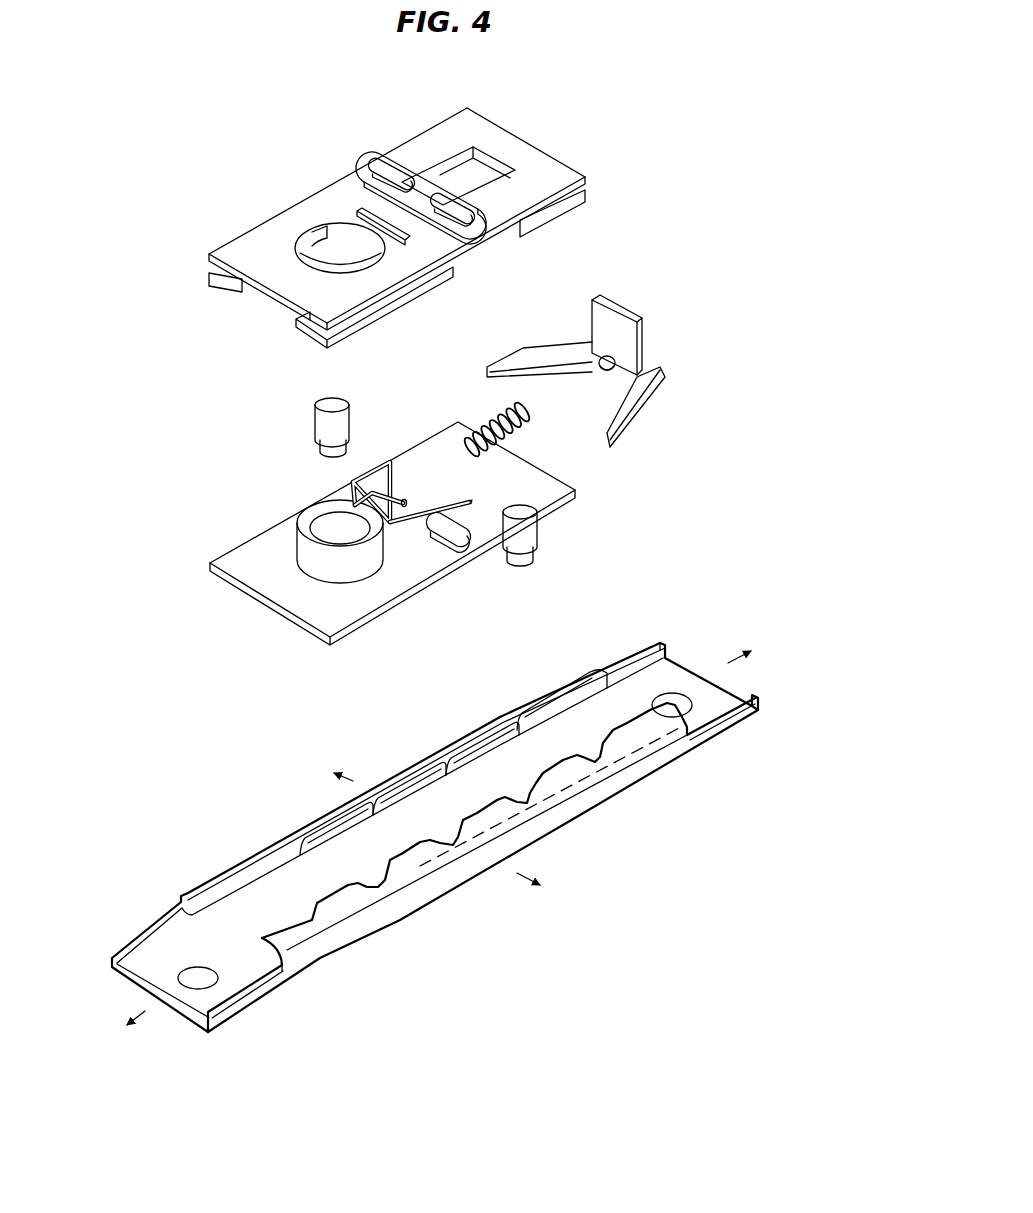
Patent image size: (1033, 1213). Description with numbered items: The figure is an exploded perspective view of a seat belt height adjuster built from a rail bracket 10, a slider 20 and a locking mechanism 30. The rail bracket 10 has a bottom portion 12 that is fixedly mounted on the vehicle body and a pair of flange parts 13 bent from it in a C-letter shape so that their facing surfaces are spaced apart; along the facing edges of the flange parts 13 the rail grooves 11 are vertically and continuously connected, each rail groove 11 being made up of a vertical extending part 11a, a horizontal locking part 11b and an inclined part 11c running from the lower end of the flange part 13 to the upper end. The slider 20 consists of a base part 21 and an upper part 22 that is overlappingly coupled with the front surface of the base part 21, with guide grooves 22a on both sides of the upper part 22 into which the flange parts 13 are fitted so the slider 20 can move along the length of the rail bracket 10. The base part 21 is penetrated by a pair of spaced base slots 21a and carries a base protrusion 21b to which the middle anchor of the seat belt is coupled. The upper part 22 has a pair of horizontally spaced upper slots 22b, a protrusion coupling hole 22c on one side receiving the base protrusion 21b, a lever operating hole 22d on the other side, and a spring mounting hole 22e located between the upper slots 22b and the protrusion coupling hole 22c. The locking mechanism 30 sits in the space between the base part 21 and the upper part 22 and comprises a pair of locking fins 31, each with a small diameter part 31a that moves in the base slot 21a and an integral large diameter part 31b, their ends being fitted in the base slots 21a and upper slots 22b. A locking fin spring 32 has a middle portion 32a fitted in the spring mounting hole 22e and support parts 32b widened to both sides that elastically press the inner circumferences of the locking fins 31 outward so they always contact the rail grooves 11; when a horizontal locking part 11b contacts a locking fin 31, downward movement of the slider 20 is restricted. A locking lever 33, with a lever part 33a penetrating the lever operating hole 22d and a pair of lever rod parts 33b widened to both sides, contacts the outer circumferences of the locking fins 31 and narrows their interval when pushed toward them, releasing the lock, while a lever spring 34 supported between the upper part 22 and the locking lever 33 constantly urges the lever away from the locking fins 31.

The rail bracket 10 is at (598, 840).
The rail grooves 11 is at (390, 1005).
The vertical extending part 11a is at (358, 850).
The horizontal locking part 11b is at (312, 848).
The inclined part 11c is at (352, 840).
The bottom portion 12 is at (673, 672).
The flange parts 13 is at (420, 773).
The slider 20 is at (191, 248).
The base part 21 is at (313, 603).
The base slots 21a is at (447, 537).
The base protrusion 21b is at (307, 557).
The upper part 22 is at (255, 247).
The guide grooves 22a is at (307, 323).
The upper slots 22b is at (445, 202).
The protrusion coupling hole 22c is at (337, 237).
The lever operating hole 22d is at (488, 167).
The spring mounting hole 22e is at (362, 207).
The locking mechanism 30 is at (655, 301).
The locking fins 31 is at (299, 422).
The small diameter part 31a is at (315, 445).
The large diameter part 31b is at (325, 402).
The locking fin spring 32 is at (399, 525).
The middle portion 32a is at (352, 490).
The support parts 32b is at (380, 462).
The locking lever 33 is at (624, 298).
The lever part 33a is at (642, 335).
The lever rod parts 33b is at (540, 353).
The lever spring 34 is at (487, 413).